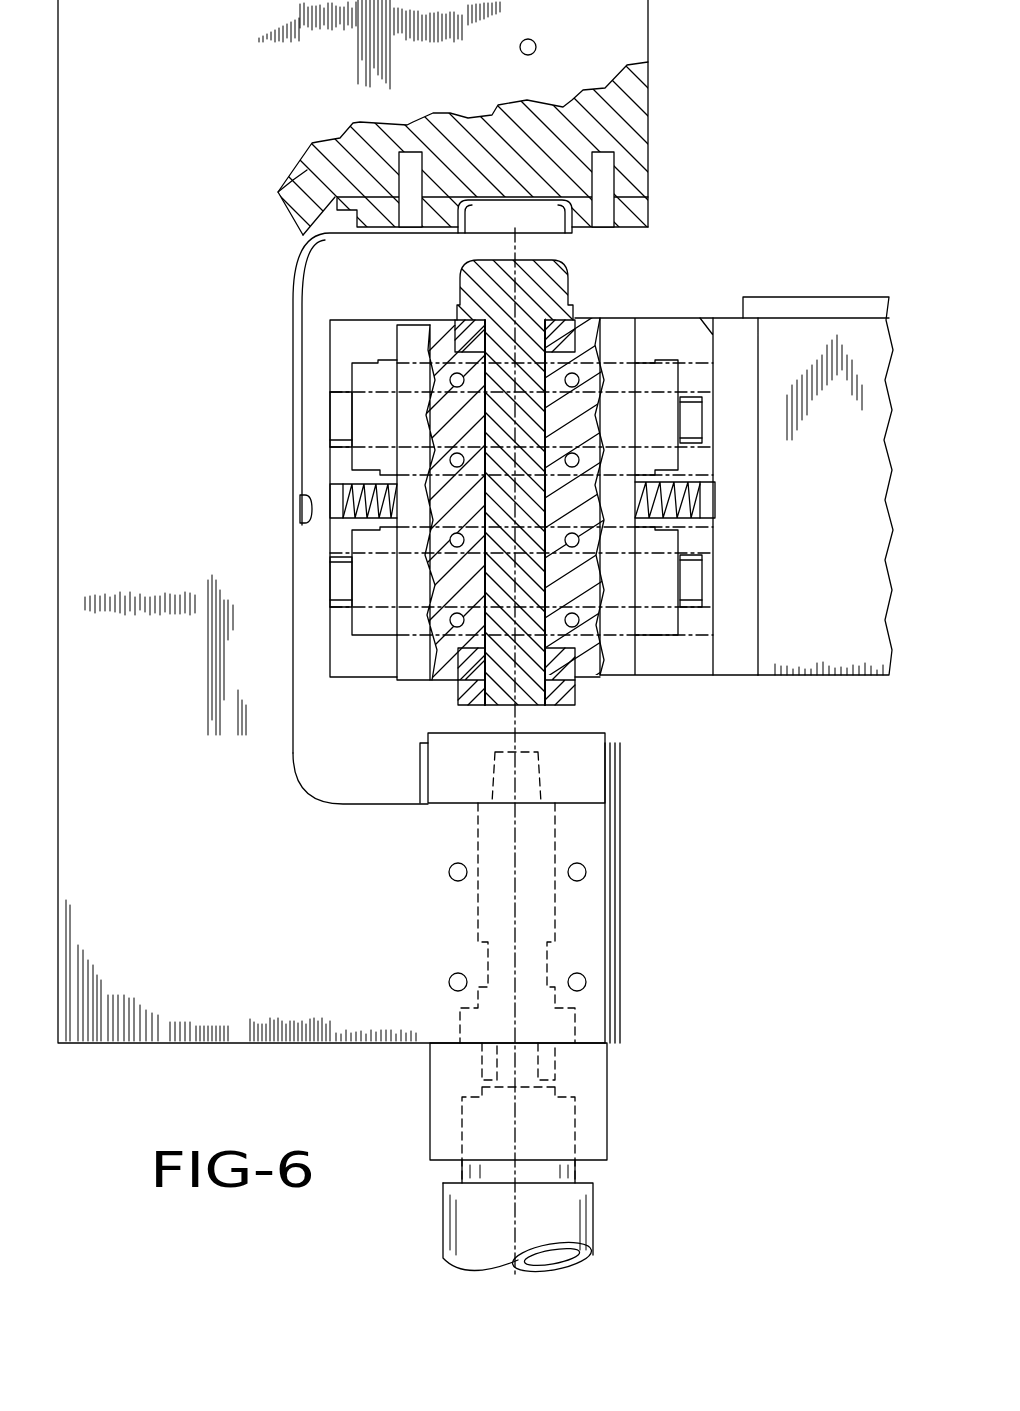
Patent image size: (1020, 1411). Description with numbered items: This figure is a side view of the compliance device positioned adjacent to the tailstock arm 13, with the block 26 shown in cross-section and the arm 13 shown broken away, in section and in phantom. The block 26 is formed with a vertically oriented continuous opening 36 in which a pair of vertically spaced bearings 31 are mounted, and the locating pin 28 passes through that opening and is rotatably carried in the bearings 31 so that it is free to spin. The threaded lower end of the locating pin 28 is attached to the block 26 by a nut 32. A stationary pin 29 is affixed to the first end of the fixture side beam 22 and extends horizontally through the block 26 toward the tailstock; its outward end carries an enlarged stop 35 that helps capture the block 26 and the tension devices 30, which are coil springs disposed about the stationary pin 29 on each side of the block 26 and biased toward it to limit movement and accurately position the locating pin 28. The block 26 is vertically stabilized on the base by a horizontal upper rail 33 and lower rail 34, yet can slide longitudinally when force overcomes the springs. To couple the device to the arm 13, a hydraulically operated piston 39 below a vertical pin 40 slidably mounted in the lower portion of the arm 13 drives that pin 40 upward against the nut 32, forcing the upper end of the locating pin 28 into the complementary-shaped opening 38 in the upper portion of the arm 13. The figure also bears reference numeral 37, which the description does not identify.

The tailstock arm 13 is at (150, 283).
The side beam 22 is at (855, 308).
The block 26 is at (400, 343).
The locating pin 28 is at (470, 270).
The stationary pin 29 is at (347, 484).
The tension device 30 is at (357, 520).
The bearings 31 is at (457, 308).
The nut 32 is at (470, 690).
The upper rail 33 is at (340, 405).
The lower rail 34 is at (338, 607).
The stop 35 is at (320, 500).
The continuous opening 36 is at (485, 510).
The washer 37 is at (560, 325).
The opening 38 is at (553, 232).
The piston 39 is at (593, 1225).
The pin 40 is at (558, 970).